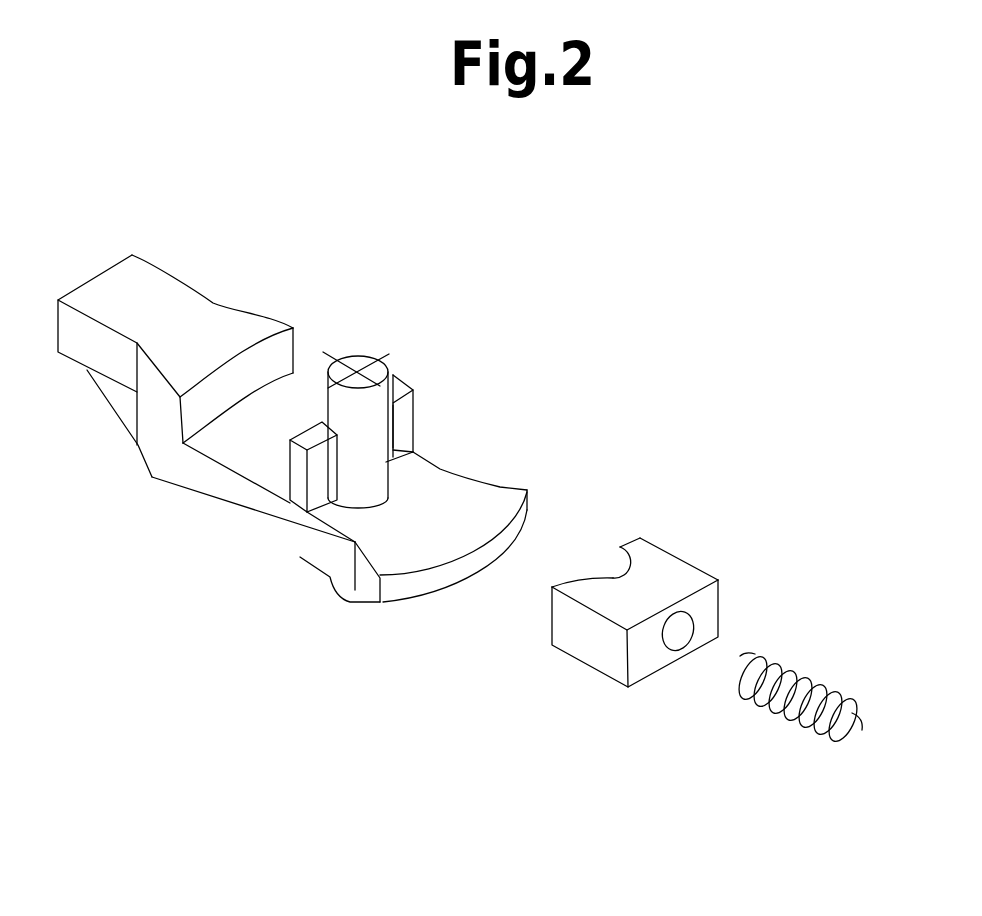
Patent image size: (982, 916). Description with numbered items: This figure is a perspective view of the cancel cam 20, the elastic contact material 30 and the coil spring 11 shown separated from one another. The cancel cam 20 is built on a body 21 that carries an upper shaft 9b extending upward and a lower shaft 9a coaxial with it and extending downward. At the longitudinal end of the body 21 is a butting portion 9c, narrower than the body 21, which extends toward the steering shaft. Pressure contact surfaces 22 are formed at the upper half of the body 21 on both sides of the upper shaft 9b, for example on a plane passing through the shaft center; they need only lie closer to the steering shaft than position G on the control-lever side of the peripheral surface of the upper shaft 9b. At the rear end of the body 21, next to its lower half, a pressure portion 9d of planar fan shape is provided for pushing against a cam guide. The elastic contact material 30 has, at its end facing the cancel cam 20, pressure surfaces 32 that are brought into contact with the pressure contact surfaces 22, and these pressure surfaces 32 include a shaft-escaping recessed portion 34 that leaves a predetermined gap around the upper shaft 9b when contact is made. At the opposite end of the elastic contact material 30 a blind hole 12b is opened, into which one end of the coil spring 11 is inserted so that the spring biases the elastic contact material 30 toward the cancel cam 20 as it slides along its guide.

The cancel cam 20 is at (180, 503).
The body 21 is at (245, 512).
The lower shaft 9a is at (347, 603).
The upper shaft 9b is at (362, 360).
The butting portion 9c is at (168, 277).
The pressure portion 9d is at (422, 585).
The pressure contact surfaces 22 is at (417, 422).
The position G is at (417, 447).
The elastic contact material 30 is at (684, 560).
The pressure surfaces 32 is at (636, 538).
The shaft-escaping recessed portion 34 is at (587, 578).
The blind hole 12b is at (675, 645).
The coil spring 11 is at (827, 687).